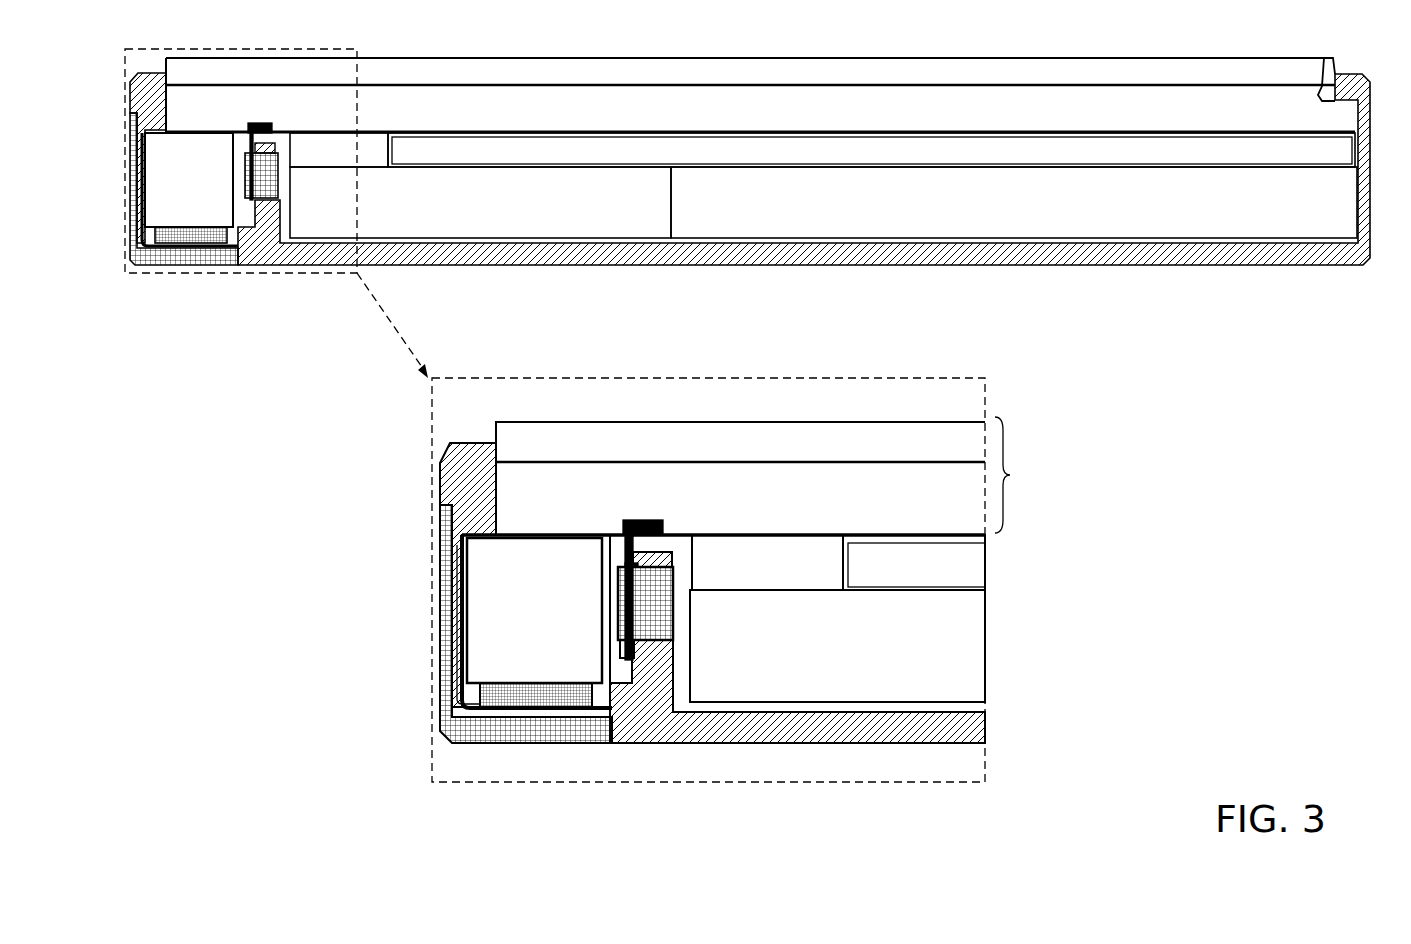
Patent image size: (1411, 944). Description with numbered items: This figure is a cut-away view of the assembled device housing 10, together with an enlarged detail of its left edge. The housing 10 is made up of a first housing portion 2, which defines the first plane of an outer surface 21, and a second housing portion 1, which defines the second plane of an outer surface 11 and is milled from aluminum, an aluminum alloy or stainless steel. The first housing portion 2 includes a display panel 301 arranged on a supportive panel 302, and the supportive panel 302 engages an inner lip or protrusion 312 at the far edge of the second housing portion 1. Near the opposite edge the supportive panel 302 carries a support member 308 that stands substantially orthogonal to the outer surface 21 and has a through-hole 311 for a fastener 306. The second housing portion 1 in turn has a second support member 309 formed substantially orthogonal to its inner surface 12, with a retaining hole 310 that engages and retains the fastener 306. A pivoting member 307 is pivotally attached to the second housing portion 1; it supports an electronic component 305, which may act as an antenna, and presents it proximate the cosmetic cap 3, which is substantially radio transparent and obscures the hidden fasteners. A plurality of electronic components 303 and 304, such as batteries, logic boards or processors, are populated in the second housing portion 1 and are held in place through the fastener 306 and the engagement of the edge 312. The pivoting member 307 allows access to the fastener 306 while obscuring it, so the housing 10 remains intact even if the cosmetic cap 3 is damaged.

The second housing portion 1 is at (1107, 262).
The first housing portion 2 is at (763, 475).
The cosmetic cap 3 is at (554, 745).
The device housing 10 is at (1250, 32).
The outer surface 11 is at (729, 745).
The inner surface 12 is at (715, 712).
The outer surface 21 is at (1122, 57).
The display panel 301 is at (1137, 83).
The supportive panel 302 is at (1137, 113).
The electronic component 303 is at (342, 160).
The electronic component 304 is at (1005, 159).
The electronic component 305 is at (510, 690).
The fastener 306 is at (661, 619).
The pivoting member 307 is at (552, 621).
The support member 308 is at (646, 520).
The second support member 309 is at (684, 661).
The retaining hole 310 is at (682, 563).
The through-hole 311 is at (616, 540).
The inner lip 312 is at (1326, 60).